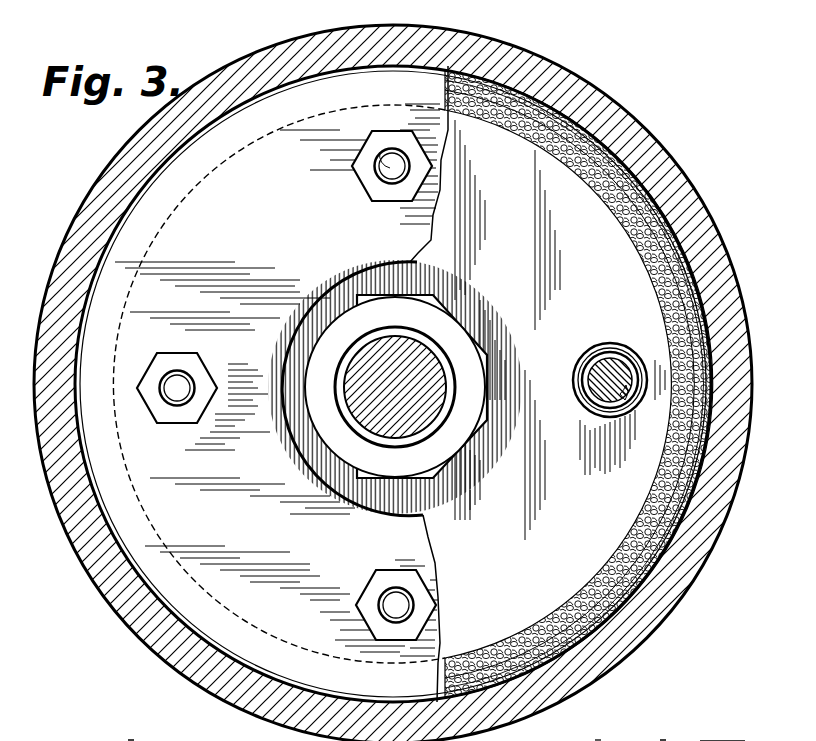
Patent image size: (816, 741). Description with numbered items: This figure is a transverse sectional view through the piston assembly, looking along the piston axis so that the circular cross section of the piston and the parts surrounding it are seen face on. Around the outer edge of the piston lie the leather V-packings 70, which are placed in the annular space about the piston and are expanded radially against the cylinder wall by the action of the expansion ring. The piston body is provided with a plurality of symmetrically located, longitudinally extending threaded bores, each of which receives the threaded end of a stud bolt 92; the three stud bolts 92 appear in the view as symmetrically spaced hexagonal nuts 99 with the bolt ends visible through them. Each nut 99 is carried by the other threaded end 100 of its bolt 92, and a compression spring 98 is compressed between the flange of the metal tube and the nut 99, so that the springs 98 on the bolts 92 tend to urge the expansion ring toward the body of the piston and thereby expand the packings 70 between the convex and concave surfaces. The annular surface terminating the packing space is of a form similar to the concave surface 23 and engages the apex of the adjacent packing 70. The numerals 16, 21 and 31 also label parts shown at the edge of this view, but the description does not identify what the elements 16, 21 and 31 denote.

The base 16 is at (170, 740).
The support 21 is at (130, 740).
The concave surface 23 is at (598, 740).
The casing ring 31 is at (566, 168).
The leather V-packing 70 is at (662, 524).
The stud bolt 92 is at (388, 173).
The compression spring 98 is at (605, 362).
The nut 99 is at (366, 155).
The threaded end 100 is at (390, 152).